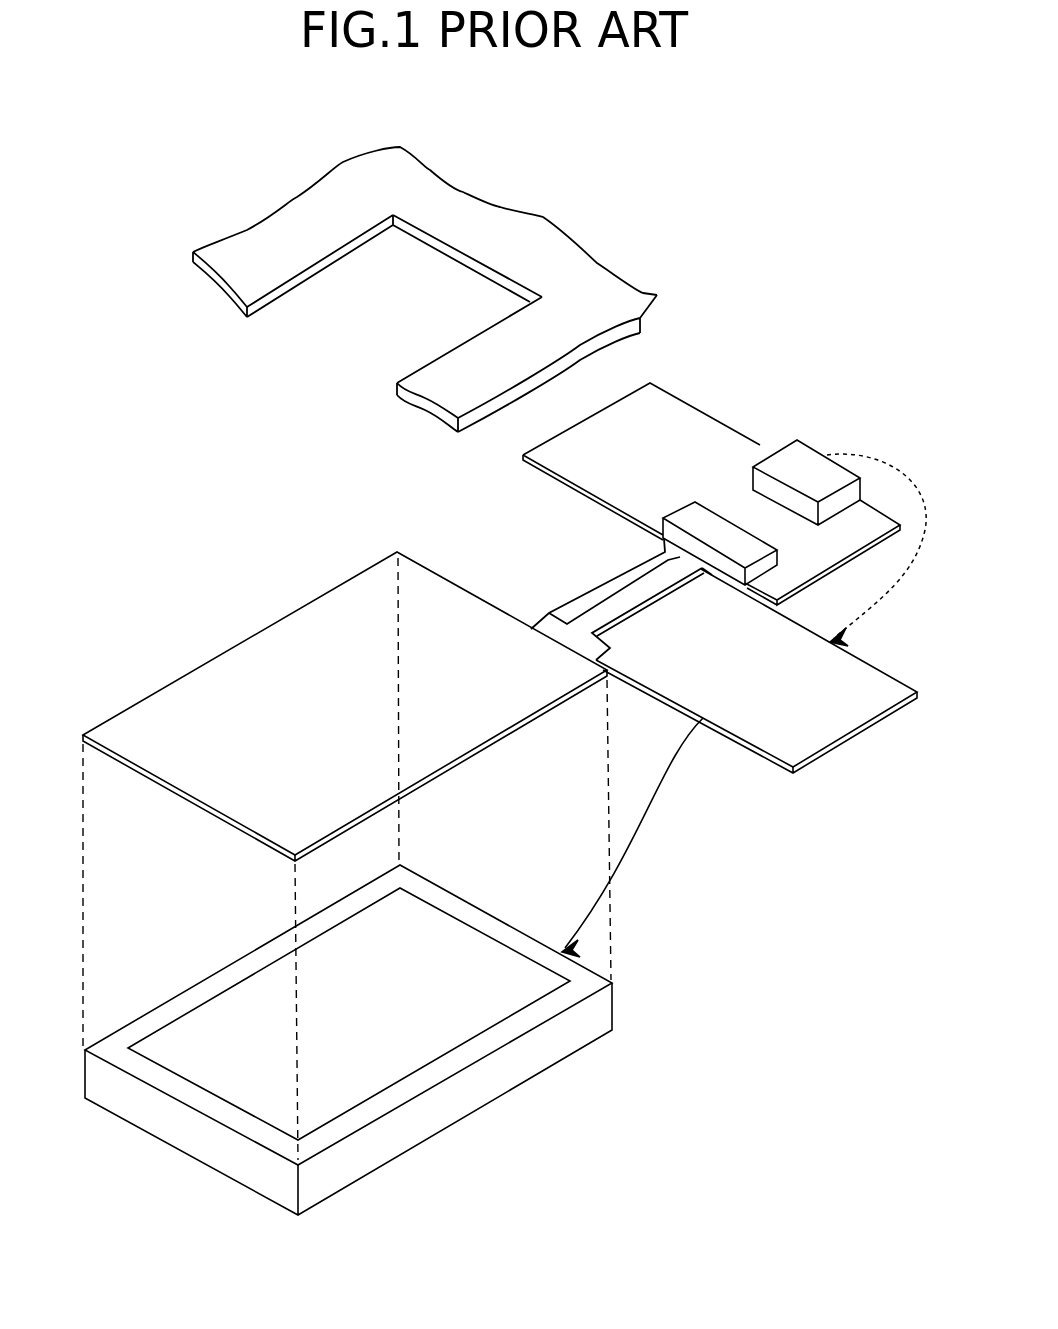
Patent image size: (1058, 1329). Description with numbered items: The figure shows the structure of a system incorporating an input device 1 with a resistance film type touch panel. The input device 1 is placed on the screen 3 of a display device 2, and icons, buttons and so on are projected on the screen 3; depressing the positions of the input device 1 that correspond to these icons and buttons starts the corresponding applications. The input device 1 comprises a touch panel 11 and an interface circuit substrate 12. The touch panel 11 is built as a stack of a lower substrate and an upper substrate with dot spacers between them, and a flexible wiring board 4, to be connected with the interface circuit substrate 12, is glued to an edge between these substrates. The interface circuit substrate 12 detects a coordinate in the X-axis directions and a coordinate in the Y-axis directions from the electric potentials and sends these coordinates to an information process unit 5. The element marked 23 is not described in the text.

The input device 1 is at (248, 502).
The touch panel 11 is at (380, 592).
The interface circuit substrate 12 is at (523, 457).
The display device 2 is at (412, 1040).
The screen 3 is at (472, 1010).
The flexible wiring board 4 is at (483, 212).
The information process unit 5 is at (815, 732).
The flexible cable 23 is at (607, 610).